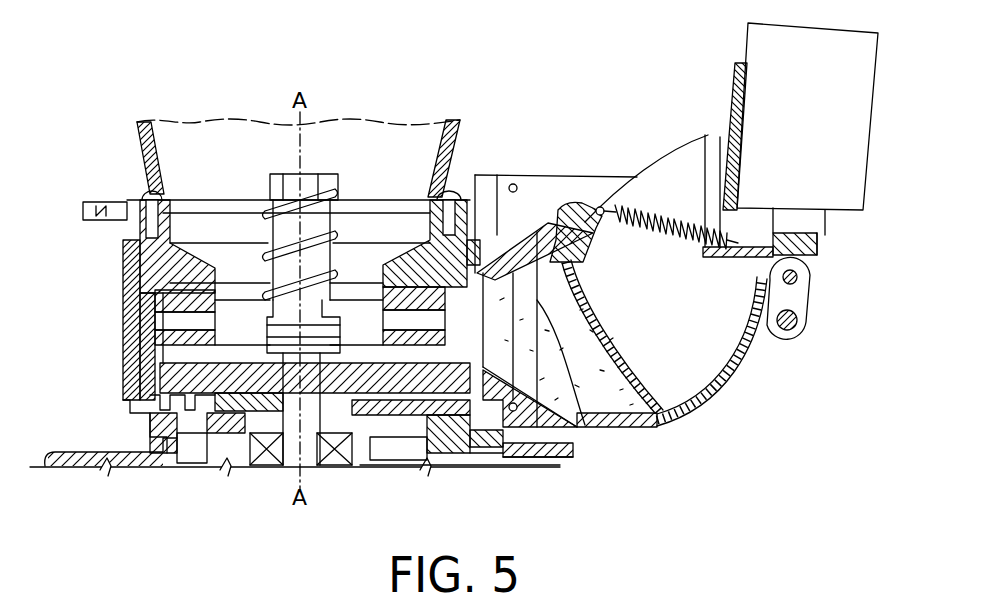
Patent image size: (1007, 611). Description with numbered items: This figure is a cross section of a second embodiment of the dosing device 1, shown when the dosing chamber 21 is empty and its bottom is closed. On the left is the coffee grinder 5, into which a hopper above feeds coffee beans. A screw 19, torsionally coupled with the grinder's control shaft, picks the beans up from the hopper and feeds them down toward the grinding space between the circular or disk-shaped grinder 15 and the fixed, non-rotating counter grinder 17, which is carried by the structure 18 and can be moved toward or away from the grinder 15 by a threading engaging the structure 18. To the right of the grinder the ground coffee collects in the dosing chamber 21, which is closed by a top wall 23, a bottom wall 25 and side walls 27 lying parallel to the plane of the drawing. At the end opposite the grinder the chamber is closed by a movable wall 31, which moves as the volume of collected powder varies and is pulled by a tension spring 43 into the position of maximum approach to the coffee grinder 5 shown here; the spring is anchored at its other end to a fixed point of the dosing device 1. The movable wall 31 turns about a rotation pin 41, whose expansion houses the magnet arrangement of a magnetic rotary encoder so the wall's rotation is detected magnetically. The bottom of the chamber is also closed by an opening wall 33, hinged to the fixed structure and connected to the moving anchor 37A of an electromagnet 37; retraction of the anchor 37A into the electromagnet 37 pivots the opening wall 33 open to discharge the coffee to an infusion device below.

The dosing device 1 is at (598, 158).
The coffee grinder 5 is at (222, 214).
The grinder 15 is at (150, 352).
The counter grinder 17 is at (148, 302).
The structure 18 is at (125, 257).
The screw 19 is at (322, 186).
The dosing chamber 21 is at (606, 400).
The top wall 23 is at (525, 240).
The bottom wall 25 is at (580, 430).
The side walls 27 is at (550, 387).
The movable wall 31 is at (623, 366).
The opening wall 33 is at (730, 369).
The electromagnet 37 is at (742, 48).
The moving anchor 37A is at (820, 247).
The rotation pin 41 is at (573, 242).
The tension spring 43 is at (677, 213).